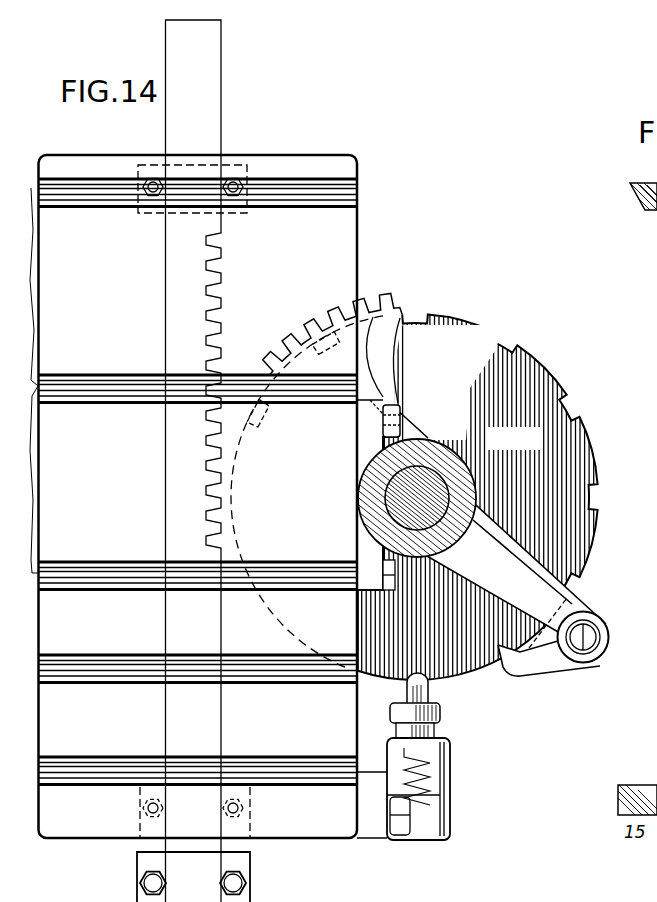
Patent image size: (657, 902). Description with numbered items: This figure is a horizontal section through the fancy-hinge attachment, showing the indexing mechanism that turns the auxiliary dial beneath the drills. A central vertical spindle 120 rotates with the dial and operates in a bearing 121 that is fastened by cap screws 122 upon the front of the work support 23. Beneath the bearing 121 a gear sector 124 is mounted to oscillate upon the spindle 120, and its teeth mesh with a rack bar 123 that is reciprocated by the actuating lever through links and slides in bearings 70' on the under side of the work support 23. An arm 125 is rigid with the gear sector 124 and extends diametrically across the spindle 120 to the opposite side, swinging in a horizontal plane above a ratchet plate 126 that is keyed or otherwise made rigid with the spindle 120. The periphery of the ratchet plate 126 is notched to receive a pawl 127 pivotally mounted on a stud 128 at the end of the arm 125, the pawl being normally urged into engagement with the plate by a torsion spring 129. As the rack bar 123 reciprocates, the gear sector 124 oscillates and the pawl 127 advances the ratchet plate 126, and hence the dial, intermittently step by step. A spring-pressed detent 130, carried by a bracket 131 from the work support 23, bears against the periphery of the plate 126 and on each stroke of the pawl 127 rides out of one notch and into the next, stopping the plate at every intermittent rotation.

The work support 23 is at (349, 272).
The bearings 70' is at (187, 497).
The central vertical spindle 120 is at (437, 487).
The bearing 121 is at (437, 450).
The cap screws 122 is at (400, 414).
The rack bar 123 is at (221, 298).
The gear sector 124 is at (385, 316).
The arm 125 is at (530, 580).
The ratchet plate 126 is at (583, 456).
The pawl 127 is at (535, 670).
The stud 128 is at (603, 624).
The torsion spring 129 is at (585, 638).
The detent 130 is at (437, 692).
The bracket 131 is at (373, 828).